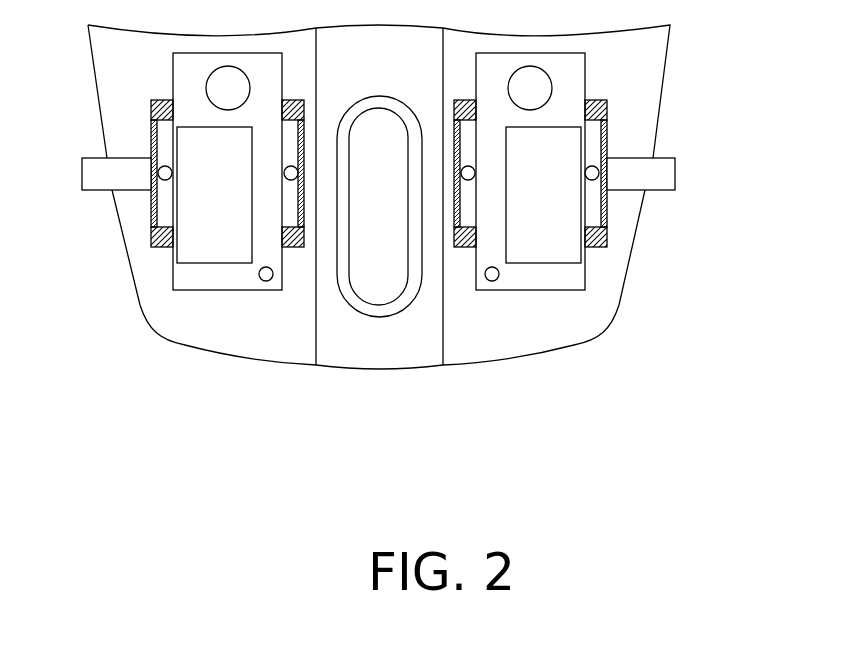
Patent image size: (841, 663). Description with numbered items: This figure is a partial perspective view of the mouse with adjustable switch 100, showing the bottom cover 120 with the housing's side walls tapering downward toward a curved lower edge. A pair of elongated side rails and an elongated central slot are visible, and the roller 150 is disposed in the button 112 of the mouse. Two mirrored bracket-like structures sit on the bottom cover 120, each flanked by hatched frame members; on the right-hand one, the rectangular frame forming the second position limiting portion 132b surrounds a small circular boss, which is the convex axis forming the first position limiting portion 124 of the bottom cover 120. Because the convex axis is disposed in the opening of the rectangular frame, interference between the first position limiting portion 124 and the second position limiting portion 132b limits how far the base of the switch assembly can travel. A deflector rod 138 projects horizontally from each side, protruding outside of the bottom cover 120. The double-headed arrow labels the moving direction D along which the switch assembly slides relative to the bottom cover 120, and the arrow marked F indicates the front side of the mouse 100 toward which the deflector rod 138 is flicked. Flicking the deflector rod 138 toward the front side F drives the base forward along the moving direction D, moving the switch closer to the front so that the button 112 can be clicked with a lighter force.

The mouse with adjustable switch 100 is at (426, 240).
The button 112 is at (475, 314).
The bottom cover 120 is at (630, 52).
The first position limiting portion 124 is at (596, 156).
The second position limiting portion 132b is at (607, 108).
The deflector rod 138 is at (665, 173).
The roller 150 is at (373, 283).
The front side F is at (263, 374).
The moving direction D is at (803, 253).